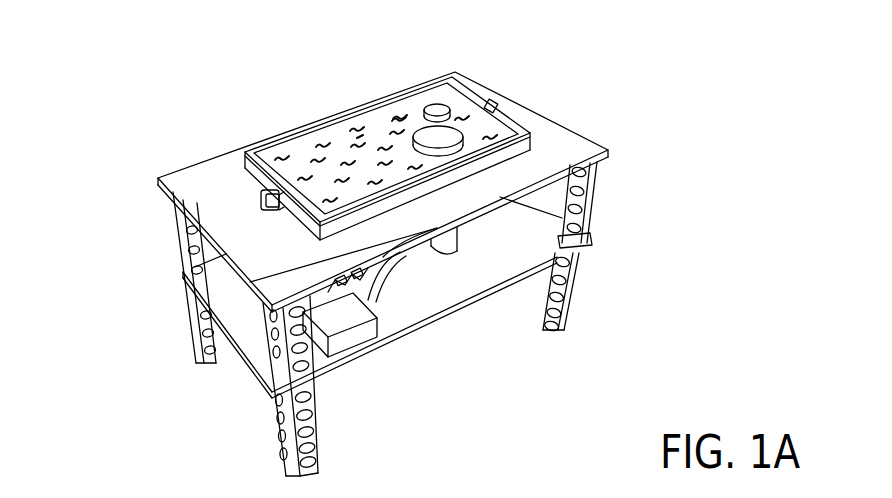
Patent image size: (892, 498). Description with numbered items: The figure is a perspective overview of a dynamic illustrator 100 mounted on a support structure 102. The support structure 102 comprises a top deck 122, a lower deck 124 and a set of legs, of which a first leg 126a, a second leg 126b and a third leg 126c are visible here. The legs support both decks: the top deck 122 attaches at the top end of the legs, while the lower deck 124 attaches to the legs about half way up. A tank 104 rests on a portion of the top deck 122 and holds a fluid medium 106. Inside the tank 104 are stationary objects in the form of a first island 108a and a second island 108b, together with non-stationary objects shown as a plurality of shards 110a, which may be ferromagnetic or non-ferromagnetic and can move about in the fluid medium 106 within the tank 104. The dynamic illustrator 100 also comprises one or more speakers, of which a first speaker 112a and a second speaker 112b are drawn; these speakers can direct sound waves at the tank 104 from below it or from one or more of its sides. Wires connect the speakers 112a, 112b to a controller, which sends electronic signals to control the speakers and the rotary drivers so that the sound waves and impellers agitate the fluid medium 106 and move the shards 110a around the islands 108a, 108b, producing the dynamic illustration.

The dynamic illustrator 100 is at (650, 351).
The support structure 102 is at (242, 350).
The tank 104 is at (283, 138).
The fluid medium 106 is at (386, 107).
The first island 108a is at (450, 108).
The second island 108b is at (463, 141).
The shards 110a is at (346, 128).
The first speaker 112a is at (265, 208).
The second speaker 112b is at (492, 108).
The top deck 122 is at (197, 180).
The lower deck 124 is at (420, 298).
The first leg 126a is at (203, 333).
The second leg 126b is at (310, 443).
The third leg 126c is at (567, 297).